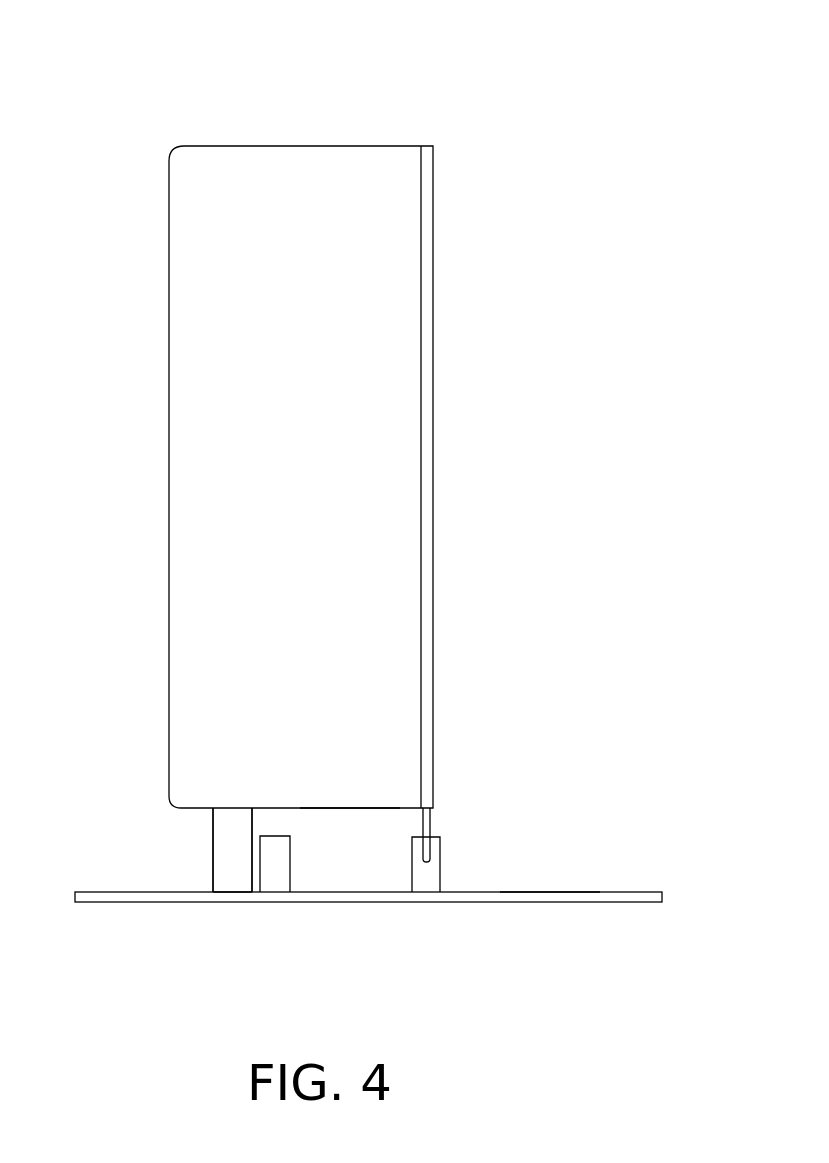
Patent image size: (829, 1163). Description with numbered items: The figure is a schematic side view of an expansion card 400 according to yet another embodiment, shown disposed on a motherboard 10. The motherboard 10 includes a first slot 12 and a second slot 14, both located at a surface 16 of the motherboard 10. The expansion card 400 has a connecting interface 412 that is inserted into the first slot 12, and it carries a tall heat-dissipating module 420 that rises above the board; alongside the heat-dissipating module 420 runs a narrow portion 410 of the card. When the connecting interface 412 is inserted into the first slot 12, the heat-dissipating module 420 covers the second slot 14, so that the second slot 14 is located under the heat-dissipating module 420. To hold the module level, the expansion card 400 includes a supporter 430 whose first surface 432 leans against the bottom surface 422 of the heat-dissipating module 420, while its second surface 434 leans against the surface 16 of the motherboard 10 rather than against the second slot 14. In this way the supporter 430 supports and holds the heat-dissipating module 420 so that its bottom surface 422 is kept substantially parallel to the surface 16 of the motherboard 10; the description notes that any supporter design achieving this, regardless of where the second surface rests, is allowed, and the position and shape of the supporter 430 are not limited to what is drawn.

The expansion card 400 is at (185, 83).
The heat-dissipating module 420 is at (190, 207).
The side plate 410 is at (430, 205).
The bottom surface of the heat-dissipating module 422 is at (345, 808).
The supporter 430 is at (112, 808).
The first surface 432 is at (237, 808).
The second surface 434 is at (228, 890).
The second slot 14 is at (276, 880).
The first slot 12 is at (437, 870).
The connecting interface 412 is at (425, 835).
The motherboard 10 is at (655, 898).
The surface of the motherboard 16 is at (540, 892).